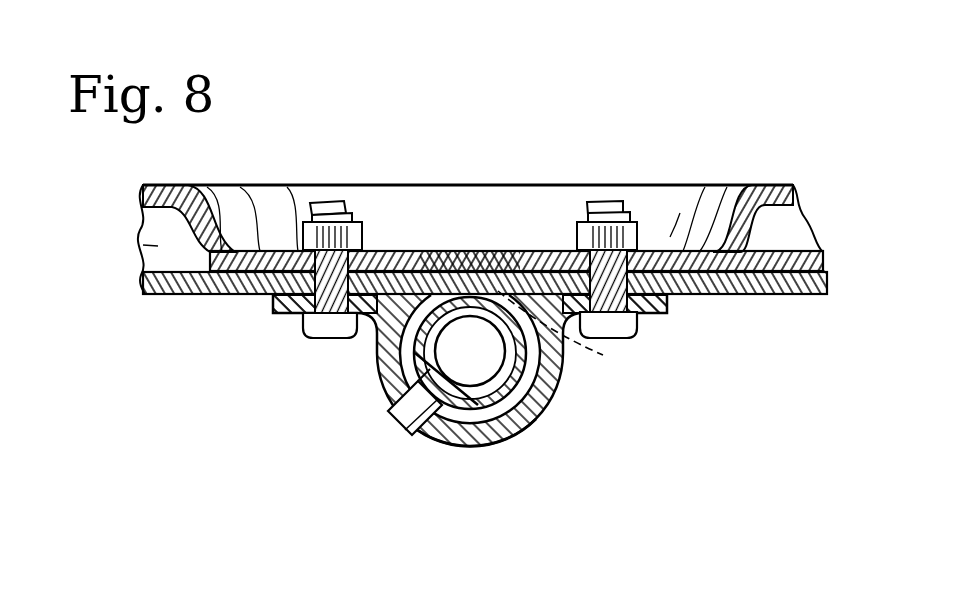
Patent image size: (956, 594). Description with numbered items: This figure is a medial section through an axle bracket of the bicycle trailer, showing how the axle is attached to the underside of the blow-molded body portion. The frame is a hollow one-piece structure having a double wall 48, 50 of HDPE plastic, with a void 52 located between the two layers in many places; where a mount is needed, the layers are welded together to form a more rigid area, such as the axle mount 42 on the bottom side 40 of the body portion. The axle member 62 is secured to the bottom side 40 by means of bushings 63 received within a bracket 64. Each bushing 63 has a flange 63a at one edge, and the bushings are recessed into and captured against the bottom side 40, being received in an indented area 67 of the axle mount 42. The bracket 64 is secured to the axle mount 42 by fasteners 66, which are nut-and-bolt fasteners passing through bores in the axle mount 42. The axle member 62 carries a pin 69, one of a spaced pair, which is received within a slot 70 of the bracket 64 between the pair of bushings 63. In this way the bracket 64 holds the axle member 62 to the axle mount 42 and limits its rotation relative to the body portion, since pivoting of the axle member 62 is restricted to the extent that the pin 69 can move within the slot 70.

The bottom side 40 is at (713, 297).
The axle mount 42 is at (450, 245).
The double wall 48 is at (150, 284).
The double wall 50 is at (152, 194).
The void 52 is at (160, 243).
The axle member 62 is at (527, 358).
The bushing 63 is at (521, 404).
The flange 63a is at (370, 345).
The bracket 64 is at (380, 388).
The fasteners 66 is at (330, 203).
The indented area 67 is at (570, 332).
The pin 69 is at (397, 430).
The slot 70 is at (509, 433).